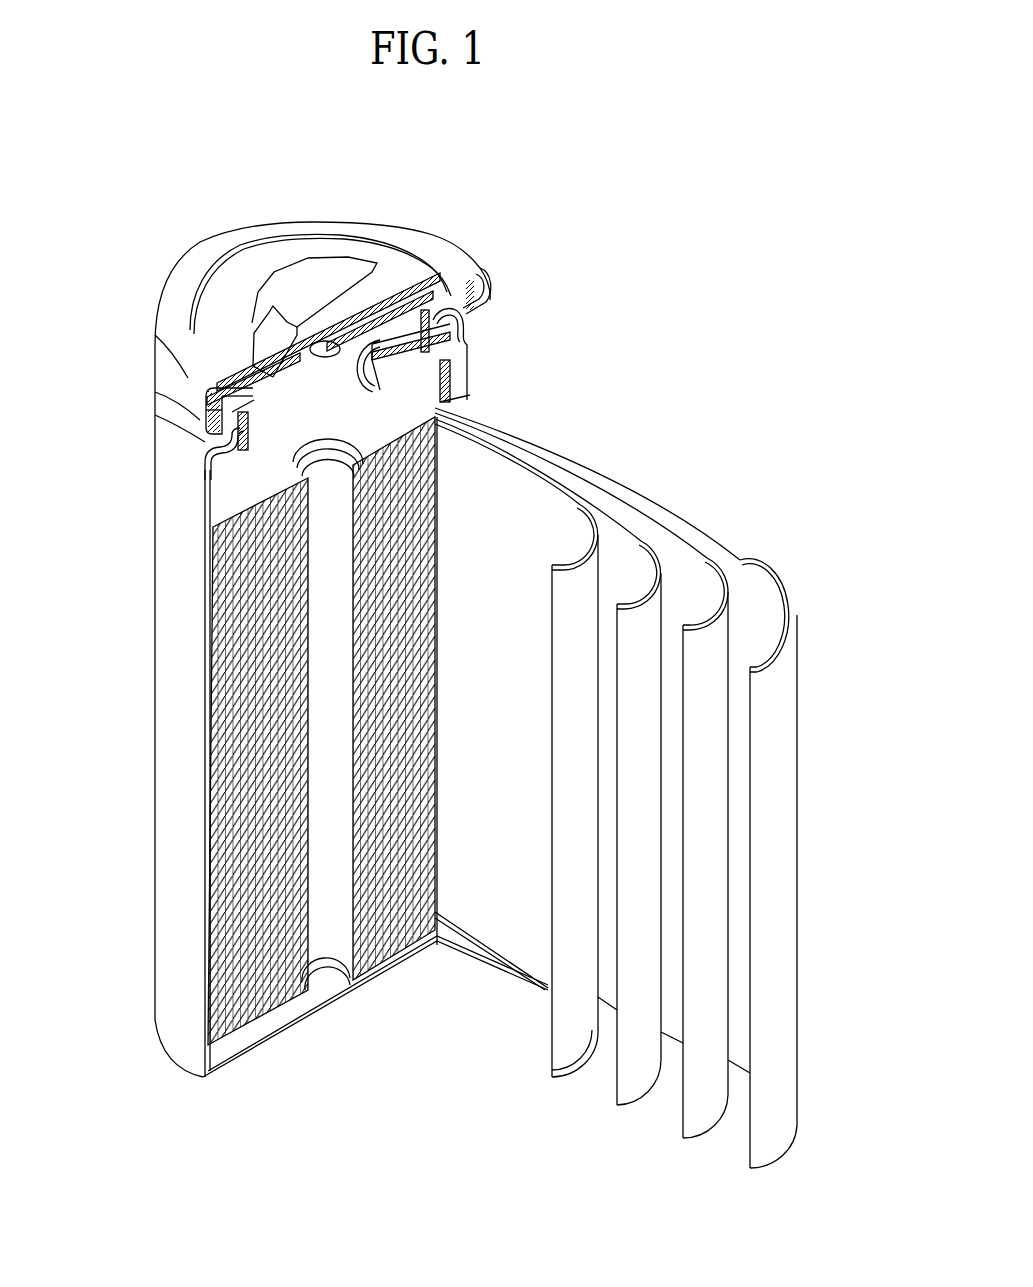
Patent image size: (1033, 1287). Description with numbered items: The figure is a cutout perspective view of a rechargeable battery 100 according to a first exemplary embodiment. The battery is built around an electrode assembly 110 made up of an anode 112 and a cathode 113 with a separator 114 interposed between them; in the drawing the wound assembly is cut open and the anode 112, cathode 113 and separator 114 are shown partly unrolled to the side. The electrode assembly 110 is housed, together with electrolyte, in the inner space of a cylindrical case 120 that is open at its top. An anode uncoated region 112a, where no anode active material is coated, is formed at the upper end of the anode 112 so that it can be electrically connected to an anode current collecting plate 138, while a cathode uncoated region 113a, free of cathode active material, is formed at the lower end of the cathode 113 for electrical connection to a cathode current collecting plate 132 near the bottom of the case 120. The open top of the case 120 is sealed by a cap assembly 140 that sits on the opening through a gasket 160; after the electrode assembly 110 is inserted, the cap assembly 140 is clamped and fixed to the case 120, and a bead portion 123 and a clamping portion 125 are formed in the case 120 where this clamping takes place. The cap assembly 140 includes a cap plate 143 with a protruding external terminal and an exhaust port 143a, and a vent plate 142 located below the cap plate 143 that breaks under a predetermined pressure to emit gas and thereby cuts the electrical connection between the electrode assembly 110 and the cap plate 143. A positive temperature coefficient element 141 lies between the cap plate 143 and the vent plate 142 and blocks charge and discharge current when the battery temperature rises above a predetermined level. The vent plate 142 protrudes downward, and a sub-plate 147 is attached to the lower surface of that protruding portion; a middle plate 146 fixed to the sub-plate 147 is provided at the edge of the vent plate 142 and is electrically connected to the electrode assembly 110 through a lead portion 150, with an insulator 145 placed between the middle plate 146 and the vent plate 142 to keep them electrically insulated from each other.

The rechargeable battery 100 is at (356, 165).
The electrode assembly 110 is at (390, 943).
The anode 112 is at (700, 1123).
The anode uncoated region 112a is at (690, 552).
The cathode 113 is at (548, 1052).
The cathode uncoated region 113a is at (557, 1077).
The separator 114 is at (633, 1088).
The case 120 is at (158, 637).
The bead portion 123 is at (199, 463).
The clamping portion 125 is at (207, 417).
The cathode current collecting plate 132 is at (267, 1020).
The anode current collecting plate 138 is at (218, 493).
The cap assembly 140 is at (566, 376).
The positive temperature coefficient element 141 is at (455, 262).
The vent plate 142 is at (460, 282).
The cap plate 143 is at (365, 258).
The exhaust port 143a is at (255, 336).
The insulator 145 is at (433, 315).
The middle plate 146 is at (457, 337).
The sub-plate 147 is at (450, 362).
The lead portion 150 is at (457, 383).
The gasket 160 is at (195, 392).